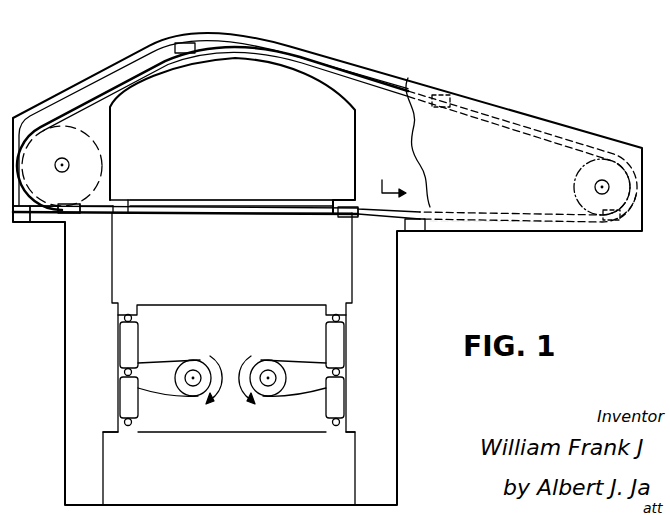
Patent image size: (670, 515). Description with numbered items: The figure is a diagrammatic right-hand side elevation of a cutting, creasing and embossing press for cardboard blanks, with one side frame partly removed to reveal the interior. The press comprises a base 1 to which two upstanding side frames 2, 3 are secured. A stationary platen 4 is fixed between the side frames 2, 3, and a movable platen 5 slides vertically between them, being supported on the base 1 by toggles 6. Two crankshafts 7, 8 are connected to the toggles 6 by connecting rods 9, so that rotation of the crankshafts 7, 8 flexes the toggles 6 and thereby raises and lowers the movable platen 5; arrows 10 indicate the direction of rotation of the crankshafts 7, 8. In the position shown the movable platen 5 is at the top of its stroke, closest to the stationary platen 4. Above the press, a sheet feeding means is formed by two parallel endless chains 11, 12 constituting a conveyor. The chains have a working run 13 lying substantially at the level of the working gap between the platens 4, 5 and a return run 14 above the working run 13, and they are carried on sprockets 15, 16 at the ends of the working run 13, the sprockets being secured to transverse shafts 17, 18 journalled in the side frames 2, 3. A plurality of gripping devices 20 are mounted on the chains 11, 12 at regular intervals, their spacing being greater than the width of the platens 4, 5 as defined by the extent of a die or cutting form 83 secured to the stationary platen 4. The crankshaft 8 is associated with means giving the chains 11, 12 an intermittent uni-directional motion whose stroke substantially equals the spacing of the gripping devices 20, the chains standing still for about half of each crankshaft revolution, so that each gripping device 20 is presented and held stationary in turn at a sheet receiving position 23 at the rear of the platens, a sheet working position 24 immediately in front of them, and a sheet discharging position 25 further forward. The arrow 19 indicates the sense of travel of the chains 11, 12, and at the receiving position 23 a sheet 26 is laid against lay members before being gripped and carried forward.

The base 1 is at (229, 457).
The side frame 2 is at (441, 142).
The side frame 3 is at (398, 289).
The stationary platen 4 is at (213, 127).
The movable platen 5 is at (232, 242).
The toggles 6 is at (138, 344).
The crankshaft 7 is at (268, 371).
The crankshaft 8 is at (195, 371).
The connecting rods 9 is at (161, 390).
The arrows 10 is at (230, 383).
The endless chain 11 is at (515, 246).
The endless chain 12 is at (521, 221).
The working run 13 is at (408, 232).
The return run 14 is at (372, 78).
The sprocket 15 is at (100, 147).
The sprocket 16 is at (595, 158).
The transverse shaft 17 is at (62, 158).
The transverse shaft 18 is at (595, 187).
The arrow 19 is at (392, 180).
The gripping devices 20 is at (183, 42).
The sheet receiving position 23 is at (77, 216).
The sheet working position 24 is at (358, 220).
The sheet discharging position 25 is at (619, 226).
The sheet 26 is at (27, 226).
The die or cutting form 83 is at (238, 201).